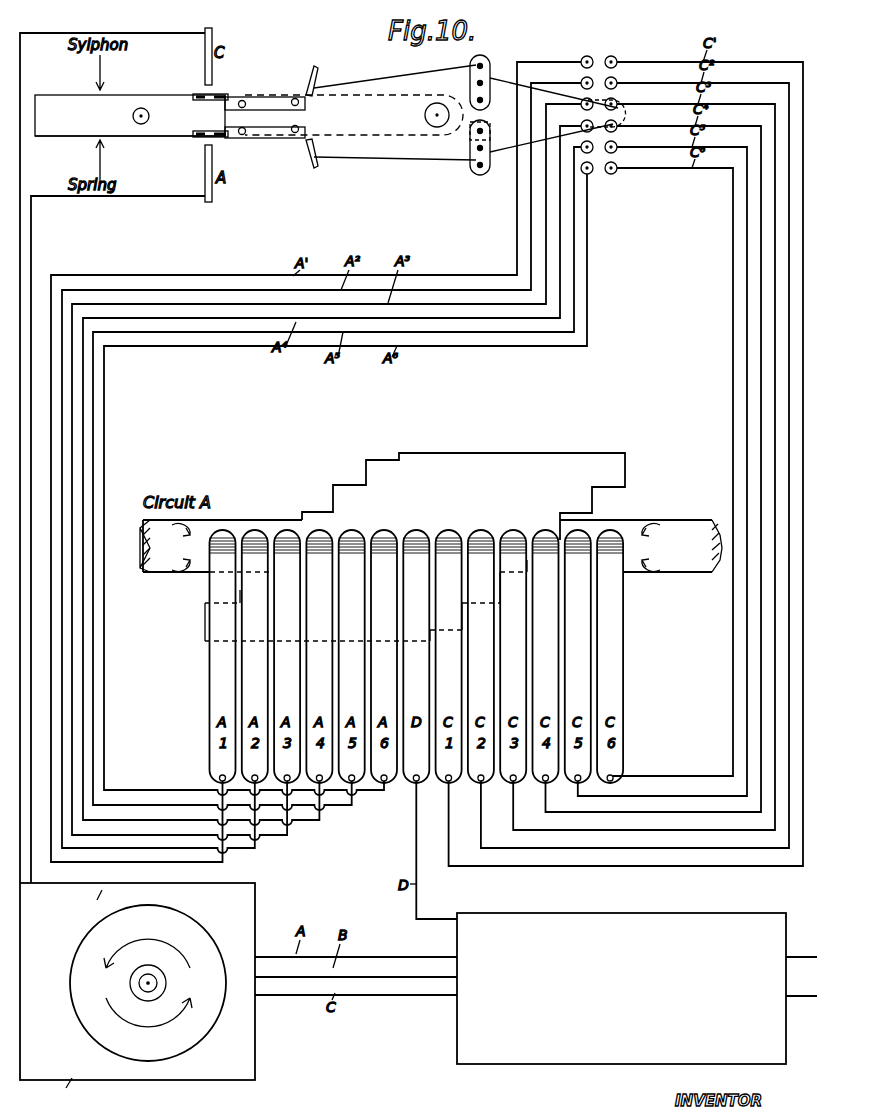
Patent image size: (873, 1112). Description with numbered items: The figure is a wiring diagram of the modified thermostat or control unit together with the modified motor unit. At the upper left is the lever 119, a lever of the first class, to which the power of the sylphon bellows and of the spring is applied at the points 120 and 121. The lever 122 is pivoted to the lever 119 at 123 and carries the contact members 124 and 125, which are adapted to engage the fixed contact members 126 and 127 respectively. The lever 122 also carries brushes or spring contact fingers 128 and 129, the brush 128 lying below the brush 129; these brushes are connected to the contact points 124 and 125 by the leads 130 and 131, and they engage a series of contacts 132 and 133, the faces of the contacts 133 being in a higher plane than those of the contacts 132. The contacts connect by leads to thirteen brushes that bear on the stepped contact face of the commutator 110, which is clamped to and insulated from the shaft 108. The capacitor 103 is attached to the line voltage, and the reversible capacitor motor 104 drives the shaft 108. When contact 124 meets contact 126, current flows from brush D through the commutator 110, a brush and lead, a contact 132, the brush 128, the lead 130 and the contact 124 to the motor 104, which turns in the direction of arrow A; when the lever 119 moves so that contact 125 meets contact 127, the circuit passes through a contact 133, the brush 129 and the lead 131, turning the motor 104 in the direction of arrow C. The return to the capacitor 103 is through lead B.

The capacitor 103 is at (458, 1024).
The capacitor motor 104 is at (152, 1062).
The shaft 108 is at (681, 573).
The commutator 110 is at (625, 462).
The lever 119 is at (150, 96).
The point of application 120 is at (97, 138).
The point of application 121 is at (95, 95).
The lever 122 is at (425, 88).
The pivot 123 is at (437, 118).
The contact member 124 is at (213, 138).
The contact member 125 is at (216, 95).
The contact member 126 is at (212, 198).
The contact member 127 is at (212, 30).
The brush 128 is at (504, 160).
The brush 129 is at (492, 80).
The lead 130 is at (358, 158).
The lead 131 is at (333, 88).
The contacts 132 is at (586, 56).
The contacts 133 is at (616, 58).